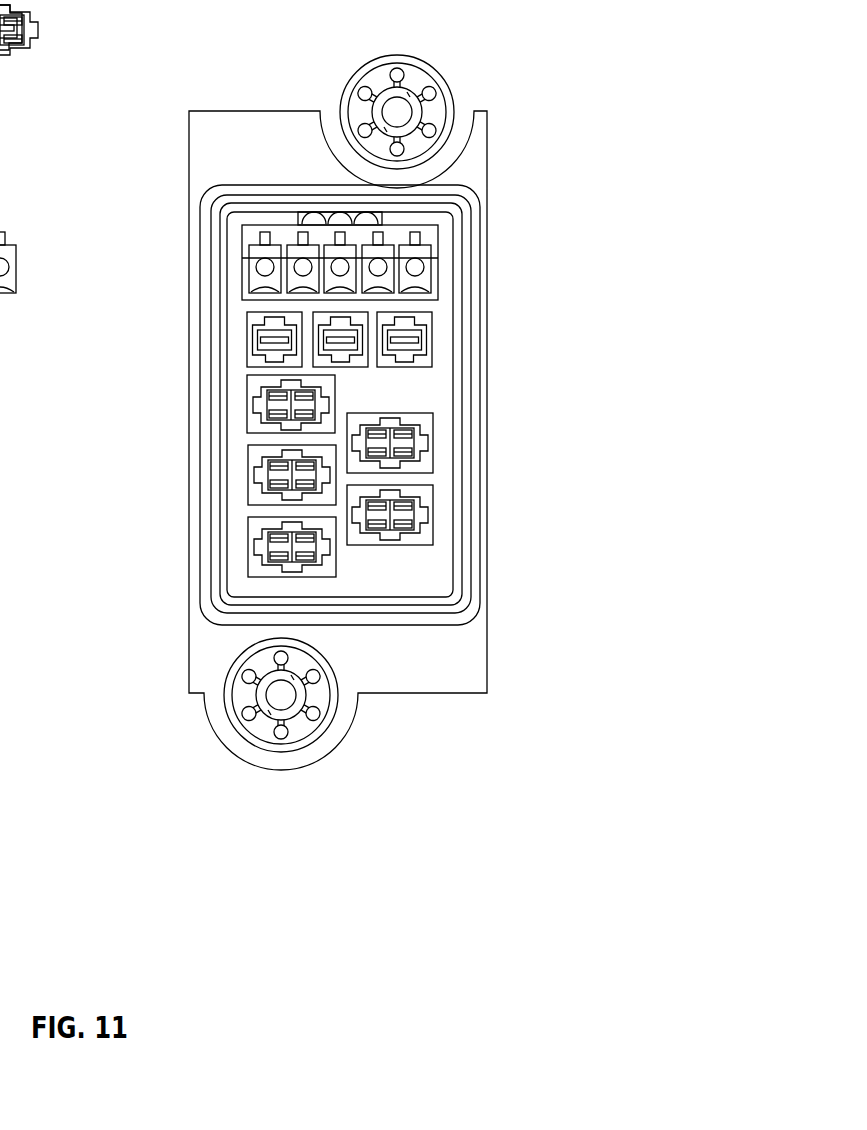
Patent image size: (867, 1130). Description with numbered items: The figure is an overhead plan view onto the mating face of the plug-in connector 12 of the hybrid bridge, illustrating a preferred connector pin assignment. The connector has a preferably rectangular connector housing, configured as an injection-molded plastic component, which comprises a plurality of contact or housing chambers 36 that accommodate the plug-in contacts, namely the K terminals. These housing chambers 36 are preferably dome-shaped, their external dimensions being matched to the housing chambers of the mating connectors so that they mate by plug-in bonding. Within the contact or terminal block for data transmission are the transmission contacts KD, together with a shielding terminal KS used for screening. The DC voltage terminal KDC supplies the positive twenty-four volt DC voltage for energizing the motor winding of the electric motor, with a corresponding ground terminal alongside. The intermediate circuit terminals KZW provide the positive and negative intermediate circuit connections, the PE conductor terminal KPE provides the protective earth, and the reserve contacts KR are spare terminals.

The plug-in connector 12 is at (189, 660).
The housing chambers 36 is at (257, 317).
The transmission contacts KD is at (633, 127).
The shielding terminal KS is at (338, 262).
The DC voltage terminal KDC is at (630, 538).
The PE conductor terminal KPE is at (283, 473).
The reserve contacts KR is at (277, 345).
The intermediate circuit terminals KZW is at (305, 553).